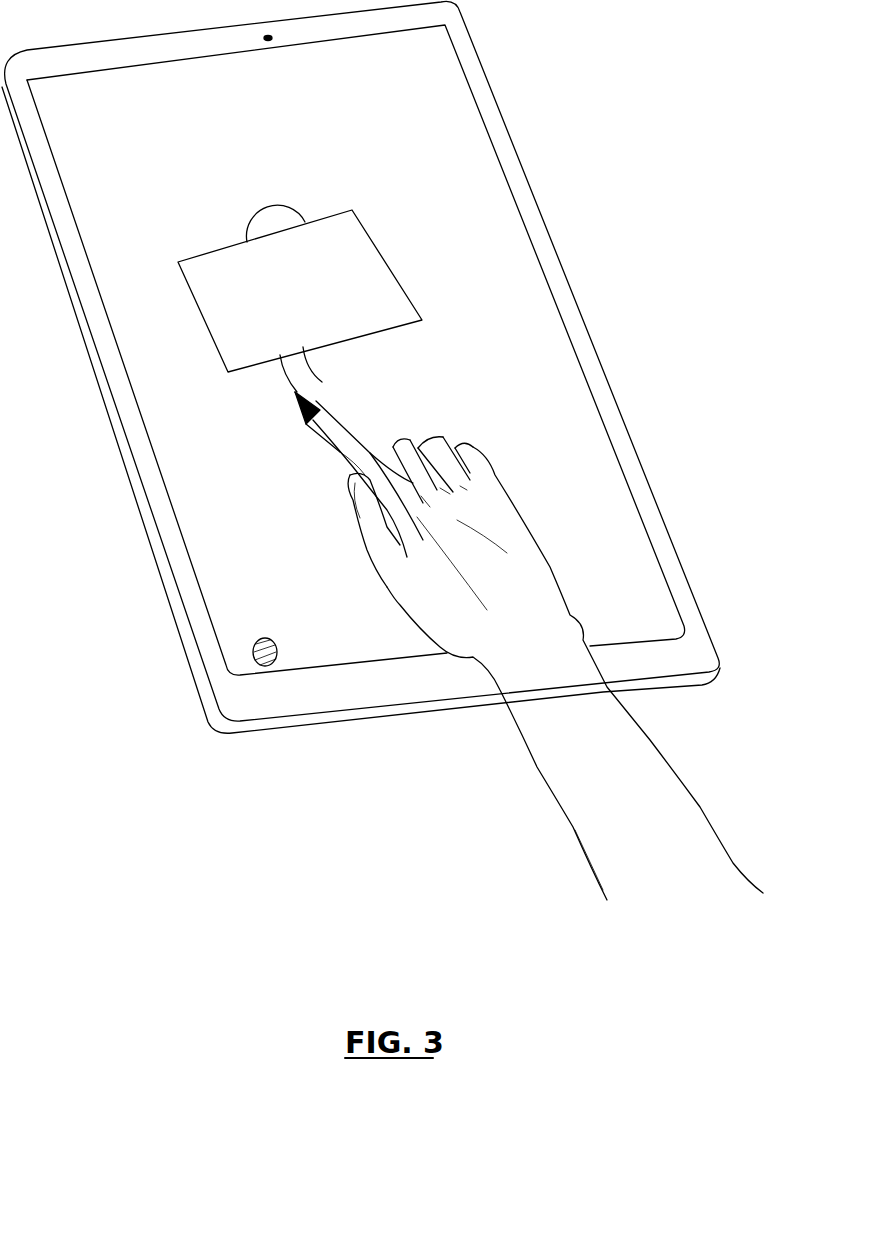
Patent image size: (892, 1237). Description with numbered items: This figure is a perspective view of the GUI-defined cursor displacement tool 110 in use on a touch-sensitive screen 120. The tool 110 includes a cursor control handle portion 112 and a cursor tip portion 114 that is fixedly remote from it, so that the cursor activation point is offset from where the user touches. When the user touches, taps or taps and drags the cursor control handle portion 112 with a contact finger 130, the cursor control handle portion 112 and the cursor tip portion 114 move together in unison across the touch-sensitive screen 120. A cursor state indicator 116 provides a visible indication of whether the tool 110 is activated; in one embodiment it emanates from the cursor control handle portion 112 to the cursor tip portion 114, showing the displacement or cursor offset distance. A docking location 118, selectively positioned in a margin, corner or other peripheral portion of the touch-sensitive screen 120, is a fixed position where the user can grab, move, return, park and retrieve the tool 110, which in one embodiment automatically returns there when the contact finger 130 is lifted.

The cursor displacement tool 110 is at (359, 423).
The cursor control handle portion 112 is at (317, 420).
The cursor tip portion 114 is at (295, 393).
The cursor state indicator 116 is at (318, 402).
The docking location 118 is at (253, 655).
The touch-sensitive screen 120 is at (460, 85).
The contact finger 130 is at (363, 430).